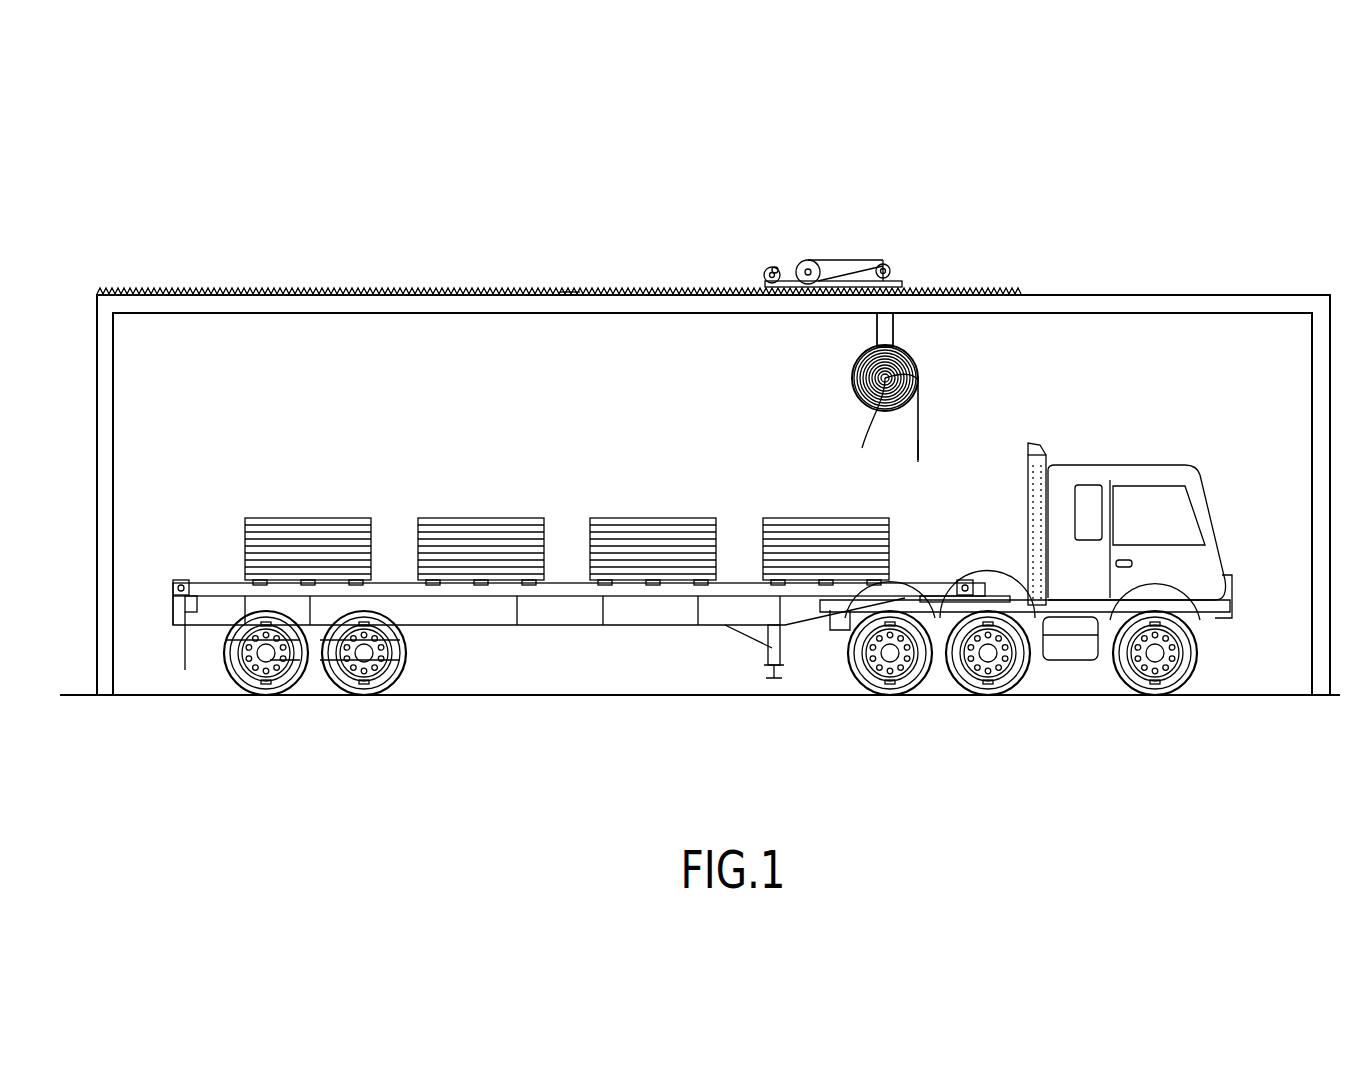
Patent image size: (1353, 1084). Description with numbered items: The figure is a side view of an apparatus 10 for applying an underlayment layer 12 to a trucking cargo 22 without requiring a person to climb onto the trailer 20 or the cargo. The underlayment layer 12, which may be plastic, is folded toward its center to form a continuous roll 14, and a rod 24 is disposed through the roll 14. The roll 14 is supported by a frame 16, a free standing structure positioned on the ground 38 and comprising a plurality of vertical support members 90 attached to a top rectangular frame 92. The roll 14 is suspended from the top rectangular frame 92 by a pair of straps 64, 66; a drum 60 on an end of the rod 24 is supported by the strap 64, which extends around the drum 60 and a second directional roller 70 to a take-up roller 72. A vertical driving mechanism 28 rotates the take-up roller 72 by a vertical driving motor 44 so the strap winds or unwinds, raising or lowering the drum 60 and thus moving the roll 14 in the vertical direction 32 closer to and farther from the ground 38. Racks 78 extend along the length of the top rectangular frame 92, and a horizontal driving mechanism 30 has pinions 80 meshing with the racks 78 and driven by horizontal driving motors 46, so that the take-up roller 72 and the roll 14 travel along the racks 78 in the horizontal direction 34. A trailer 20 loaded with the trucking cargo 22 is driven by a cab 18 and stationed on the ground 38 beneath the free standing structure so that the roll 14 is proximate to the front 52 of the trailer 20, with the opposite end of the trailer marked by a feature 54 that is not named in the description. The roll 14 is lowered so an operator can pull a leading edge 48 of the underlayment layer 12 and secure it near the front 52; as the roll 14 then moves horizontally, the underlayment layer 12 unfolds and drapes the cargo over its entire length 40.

The apparatus 10 is at (313, 196).
The underlayment layer 12 is at (918, 430).
The roll 14 is at (904, 406).
The frame 16 is at (290, 283).
The cab 18 is at (1130, 465).
The trailer 20 is at (576, 598).
The trucking cargo 22 is at (330, 517).
The rod 24 is at (857, 427).
The vertical driving mechanism 28 is at (897, 247).
The horizontal driving mechanism 30 is at (840, 211).
The vertical direction 32 is at (713, 425).
The horizontal direction 34 is at (530, 258).
The ground 38 is at (1283, 690).
The length 40 is at (892, 585).
The vertical driving motor 44 is at (806, 262).
The horizontal driving motor 46 is at (764, 281).
The leading edge 48 is at (918, 462).
The front 52 is at (972, 582).
The front bracket 54 is at (174, 587).
The drum 60 is at (894, 375).
The strap 64 is at (893, 333).
The strap 66 is at (885, 330).
The second directional roller 70 is at (891, 271).
The take-up roller 72 is at (815, 262).
The rack 78 is at (567, 290).
The pinion 80 is at (772, 270).
The vertical support member 90 is at (113, 403).
The top rectangular frame 92 is at (1215, 302).